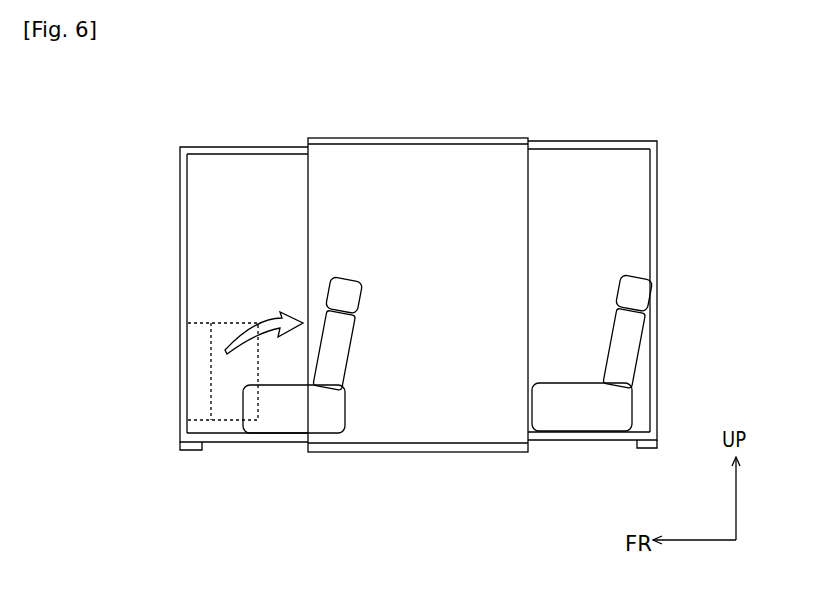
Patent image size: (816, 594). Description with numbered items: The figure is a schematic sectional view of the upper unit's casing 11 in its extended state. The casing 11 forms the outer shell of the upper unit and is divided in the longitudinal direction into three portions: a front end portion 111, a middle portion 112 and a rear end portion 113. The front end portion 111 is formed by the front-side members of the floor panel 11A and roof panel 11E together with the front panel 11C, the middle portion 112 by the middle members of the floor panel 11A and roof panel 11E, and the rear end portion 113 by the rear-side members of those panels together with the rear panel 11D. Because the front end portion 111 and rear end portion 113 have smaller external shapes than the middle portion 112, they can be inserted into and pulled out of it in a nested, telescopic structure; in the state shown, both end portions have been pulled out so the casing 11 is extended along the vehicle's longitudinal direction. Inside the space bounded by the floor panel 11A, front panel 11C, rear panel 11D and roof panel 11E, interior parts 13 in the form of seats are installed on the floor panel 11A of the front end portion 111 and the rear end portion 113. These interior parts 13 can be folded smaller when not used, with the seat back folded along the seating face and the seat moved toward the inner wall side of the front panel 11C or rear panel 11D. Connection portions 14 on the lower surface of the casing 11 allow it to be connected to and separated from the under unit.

The casing 11 is at (156, 113).
The front end portion 111 is at (201, 143).
The middle portion 112 is at (464, 139).
The rear end portion 113 is at (656, 140).
The floor panel 11A is at (244, 445).
The front panel 11C is at (178, 243).
The rear panel 11D is at (661, 263).
The roof panel 11E is at (268, 150).
The interior parts 13 is at (346, 341).
The connection portions 14 is at (190, 452).